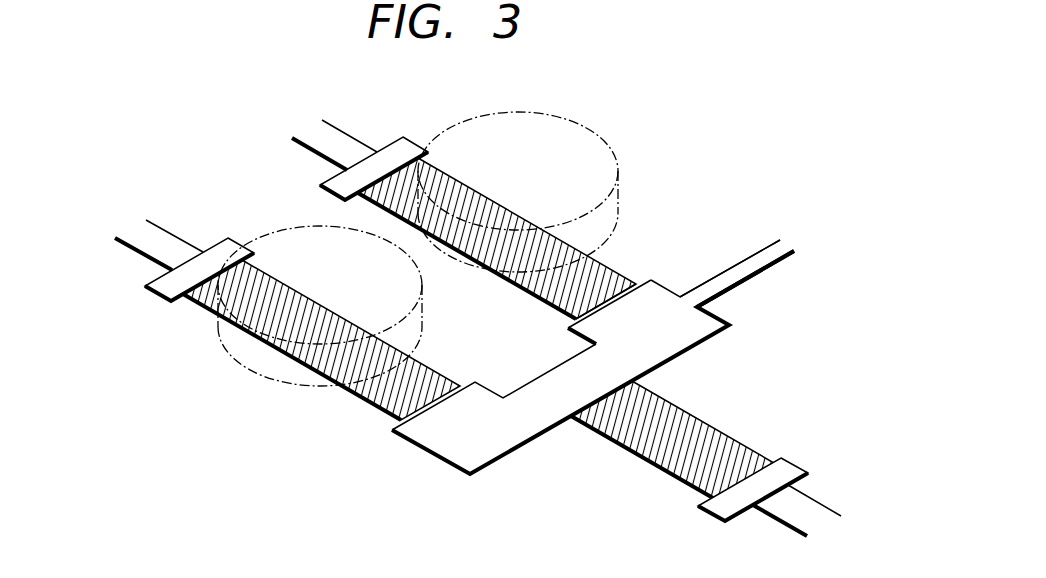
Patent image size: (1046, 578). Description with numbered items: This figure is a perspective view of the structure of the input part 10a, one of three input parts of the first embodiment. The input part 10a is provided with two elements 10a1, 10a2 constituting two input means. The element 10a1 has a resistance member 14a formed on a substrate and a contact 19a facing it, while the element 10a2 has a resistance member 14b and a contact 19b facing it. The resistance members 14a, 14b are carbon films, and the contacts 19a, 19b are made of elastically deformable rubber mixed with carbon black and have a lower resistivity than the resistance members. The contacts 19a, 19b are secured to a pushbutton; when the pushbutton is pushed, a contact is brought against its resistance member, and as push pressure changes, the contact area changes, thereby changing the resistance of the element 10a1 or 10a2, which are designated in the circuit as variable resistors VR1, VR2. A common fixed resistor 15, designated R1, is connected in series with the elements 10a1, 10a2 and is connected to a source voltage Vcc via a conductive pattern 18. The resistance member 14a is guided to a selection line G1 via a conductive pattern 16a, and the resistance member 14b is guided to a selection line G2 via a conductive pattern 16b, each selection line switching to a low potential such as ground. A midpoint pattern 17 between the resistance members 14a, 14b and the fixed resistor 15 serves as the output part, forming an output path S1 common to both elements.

The input part 10a is at (738, 333).
The element 10a1 is at (636, 213).
The element 10a2 is at (328, 403).
The resistance member 14a is at (556, 300).
The resistance member 14b is at (418, 362).
The fixed resistor 15 is at (665, 465).
The conductive pattern 16a is at (396, 137).
The conductive pattern 16b is at (218, 250).
The midpoint pattern 17 is at (665, 343).
The conductive pattern 18 is at (790, 460).
The contact 19a is at (582, 133).
The contact 19b is at (288, 233).
The variable resistor VR1 is at (613, 270).
The variable resistor VR2 is at (380, 403).
The fixed resistor designation R1 is at (617, 420).
The selection line G1 is at (348, 132).
The selection line G2 is at (145, 232).
The output path S1 is at (770, 253).
The source voltage Vcc is at (810, 522).